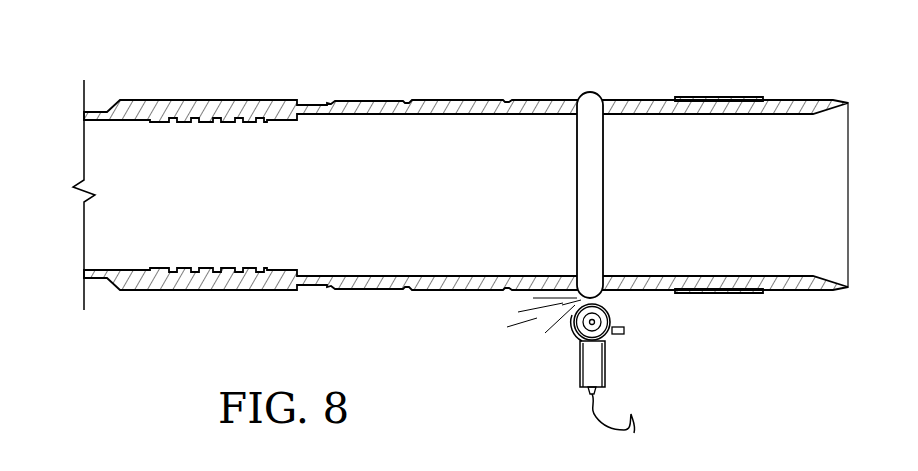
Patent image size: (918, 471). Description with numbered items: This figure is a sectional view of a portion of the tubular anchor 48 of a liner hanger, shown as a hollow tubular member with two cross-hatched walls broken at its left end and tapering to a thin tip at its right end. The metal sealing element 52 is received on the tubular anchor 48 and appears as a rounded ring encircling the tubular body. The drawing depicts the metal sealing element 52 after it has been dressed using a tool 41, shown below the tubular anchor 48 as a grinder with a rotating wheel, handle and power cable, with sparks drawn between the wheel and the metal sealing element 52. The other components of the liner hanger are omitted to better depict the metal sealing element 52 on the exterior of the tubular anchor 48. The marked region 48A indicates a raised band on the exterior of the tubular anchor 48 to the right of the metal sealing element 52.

The tubular anchor 48 is at (353, 100).
The raised band of tubular member 48A is at (723, 97).
The metal sealing element 52 is at (585, 92).
The tool 41 is at (580, 366).